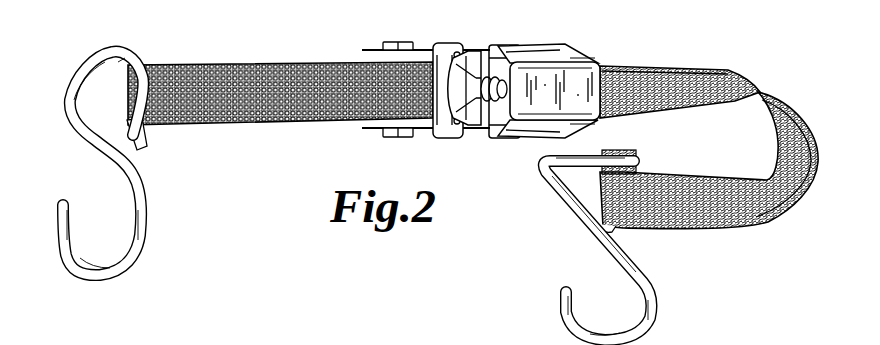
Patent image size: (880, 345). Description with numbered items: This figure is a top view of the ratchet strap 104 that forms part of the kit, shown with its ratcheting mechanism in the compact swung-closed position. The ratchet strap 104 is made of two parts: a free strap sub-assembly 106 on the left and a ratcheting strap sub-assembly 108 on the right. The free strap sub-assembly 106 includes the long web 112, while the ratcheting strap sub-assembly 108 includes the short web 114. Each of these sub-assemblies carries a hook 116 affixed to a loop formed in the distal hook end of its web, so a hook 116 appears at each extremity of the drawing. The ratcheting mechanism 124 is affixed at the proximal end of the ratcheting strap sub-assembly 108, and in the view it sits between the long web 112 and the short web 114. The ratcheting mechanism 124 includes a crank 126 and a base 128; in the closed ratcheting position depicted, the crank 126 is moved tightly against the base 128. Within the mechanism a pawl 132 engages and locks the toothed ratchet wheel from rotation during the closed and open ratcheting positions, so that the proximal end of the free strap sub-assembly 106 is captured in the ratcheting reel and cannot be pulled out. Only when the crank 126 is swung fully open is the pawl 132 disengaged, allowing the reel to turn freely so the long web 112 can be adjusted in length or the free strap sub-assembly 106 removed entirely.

The ratchet strap 104 is at (642, 51).
The free strap sub-assembly 106 is at (100, 45).
The ratcheting strap sub-assembly 108 is at (760, 83).
The long web 112 is at (247, 63).
The short web 114 is at (802, 190).
The hook 116 is at (553, 307).
The ratcheting mechanism 124 is at (517, 47).
The crank 126 is at (557, 63).
The base 128 is at (509, 338).
The pawl 132 is at (399, 338).